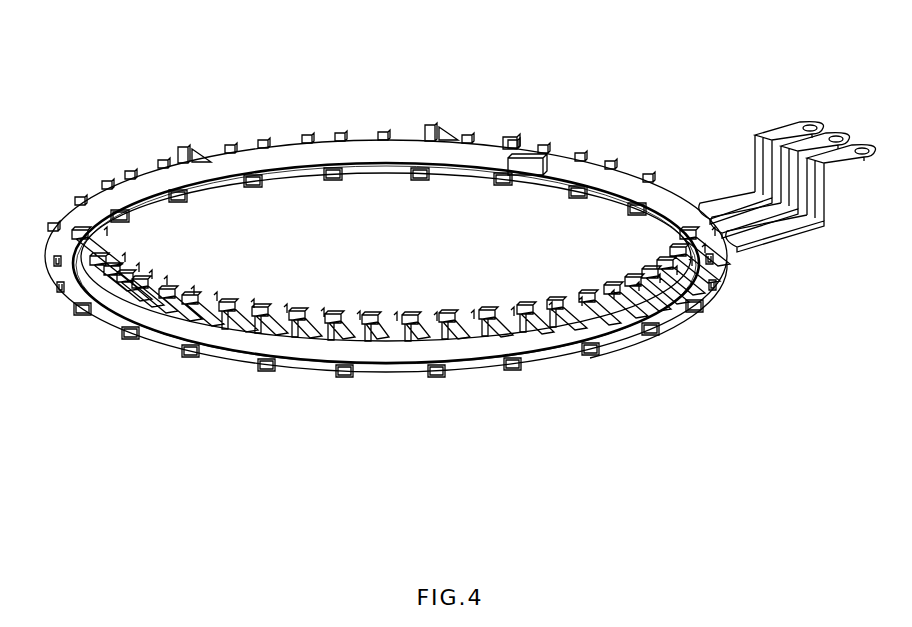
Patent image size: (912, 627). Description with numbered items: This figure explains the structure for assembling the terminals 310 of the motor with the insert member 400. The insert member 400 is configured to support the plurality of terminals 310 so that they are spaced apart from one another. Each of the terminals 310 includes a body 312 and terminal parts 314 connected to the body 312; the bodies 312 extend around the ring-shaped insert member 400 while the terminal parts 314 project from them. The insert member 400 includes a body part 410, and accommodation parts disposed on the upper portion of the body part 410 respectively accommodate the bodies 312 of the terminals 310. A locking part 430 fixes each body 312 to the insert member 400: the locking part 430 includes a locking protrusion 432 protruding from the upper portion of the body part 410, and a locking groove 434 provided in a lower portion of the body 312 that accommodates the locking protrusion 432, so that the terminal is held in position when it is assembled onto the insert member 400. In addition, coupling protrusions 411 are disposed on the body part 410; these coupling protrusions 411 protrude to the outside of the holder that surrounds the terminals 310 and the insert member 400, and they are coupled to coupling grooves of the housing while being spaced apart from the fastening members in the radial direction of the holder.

The insert member 400 is at (623, 353).
The body part 410 is at (667, 322).
The coupling protrusions 411 is at (704, 311).
The body 312 is at (406, 354).
The terminal parts 314 is at (372, 333).
The terminals 310 is at (811, 118).
The locking part 430 is at (532, 98).
The locking protrusion 432 is at (534, 158).
The locking groove 434 is at (504, 110).